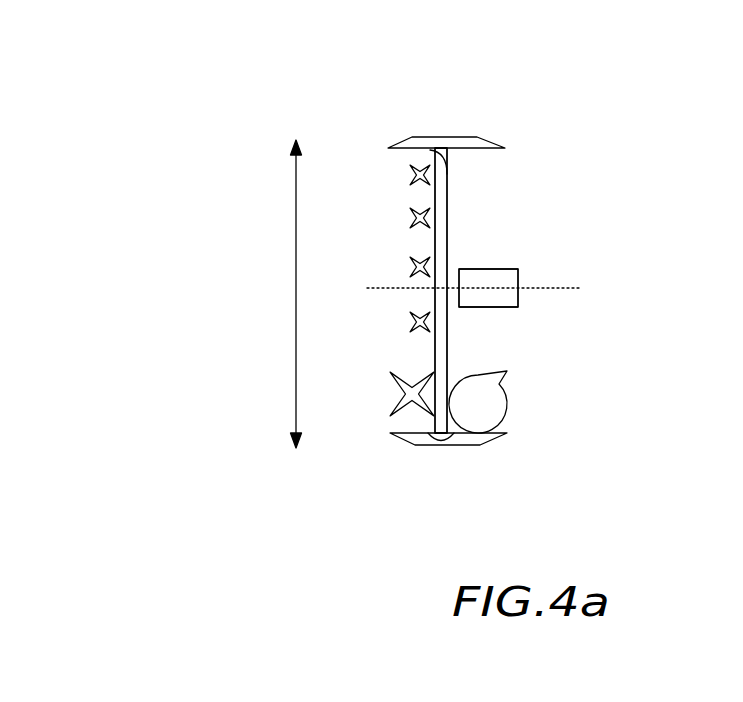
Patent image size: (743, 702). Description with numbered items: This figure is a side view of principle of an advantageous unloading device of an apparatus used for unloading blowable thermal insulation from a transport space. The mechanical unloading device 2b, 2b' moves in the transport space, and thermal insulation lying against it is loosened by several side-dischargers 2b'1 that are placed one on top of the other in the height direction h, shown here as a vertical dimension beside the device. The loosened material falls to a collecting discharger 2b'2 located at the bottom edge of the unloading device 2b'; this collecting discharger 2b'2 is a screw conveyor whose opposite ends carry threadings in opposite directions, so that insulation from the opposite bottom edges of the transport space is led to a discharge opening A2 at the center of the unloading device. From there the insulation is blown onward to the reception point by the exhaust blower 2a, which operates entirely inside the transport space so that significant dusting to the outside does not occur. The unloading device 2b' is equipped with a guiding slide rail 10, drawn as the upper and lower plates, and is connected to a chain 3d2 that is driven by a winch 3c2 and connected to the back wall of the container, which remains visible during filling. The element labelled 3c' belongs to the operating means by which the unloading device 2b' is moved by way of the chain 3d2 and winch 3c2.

The guiding slide rail 10 is at (449, 143).
The mechanical unloading device 2b is at (576, 245).
The mechanical unloading device 2b' is at (441, 290).
The side-dischargers 2b'1 is at (379, 192).
The collecting discharger 2b'2 is at (361, 499).
The chain 3d2 is at (540, 278).
The collector element 3c' is at (550, 320).
The winch 3c2 is at (500, 314).
The exhaust blower 2a is at (495, 410).
The discharge opening A2 is at (430, 424).
The height direction h is at (292, 311).